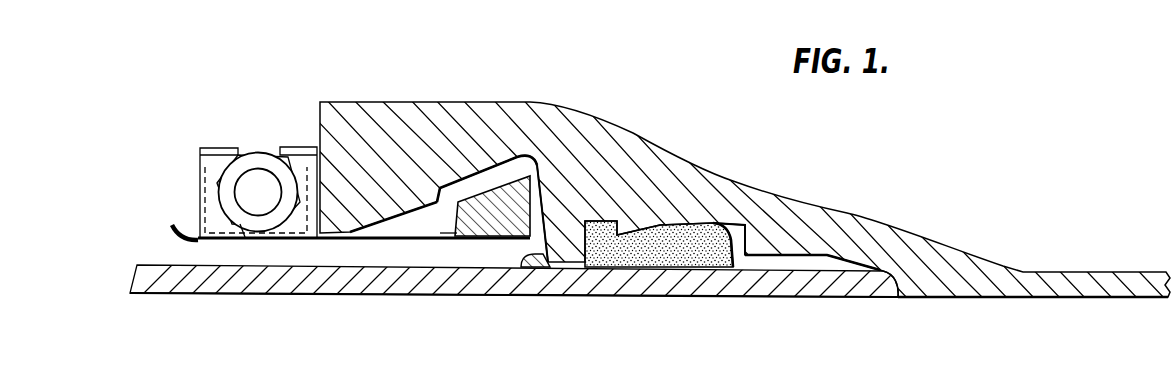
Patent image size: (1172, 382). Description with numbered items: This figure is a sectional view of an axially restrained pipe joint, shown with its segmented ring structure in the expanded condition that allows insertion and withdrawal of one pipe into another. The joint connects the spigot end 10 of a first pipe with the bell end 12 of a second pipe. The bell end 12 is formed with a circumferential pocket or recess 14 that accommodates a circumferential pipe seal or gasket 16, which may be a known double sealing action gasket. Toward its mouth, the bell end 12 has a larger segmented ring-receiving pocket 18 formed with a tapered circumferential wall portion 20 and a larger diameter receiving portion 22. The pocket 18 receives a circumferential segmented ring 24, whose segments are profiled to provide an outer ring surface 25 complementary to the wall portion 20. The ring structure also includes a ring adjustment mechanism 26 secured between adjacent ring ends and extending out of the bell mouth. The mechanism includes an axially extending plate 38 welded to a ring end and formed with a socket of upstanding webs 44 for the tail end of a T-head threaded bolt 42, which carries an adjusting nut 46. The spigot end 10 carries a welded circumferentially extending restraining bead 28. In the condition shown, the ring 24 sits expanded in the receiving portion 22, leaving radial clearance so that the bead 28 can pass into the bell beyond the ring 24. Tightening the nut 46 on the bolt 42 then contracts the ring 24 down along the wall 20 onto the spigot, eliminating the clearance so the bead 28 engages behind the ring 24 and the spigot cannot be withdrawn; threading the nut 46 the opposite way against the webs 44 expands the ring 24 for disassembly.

The spigot end 10 is at (278, 295).
The bell end 12 is at (685, 197).
The circumferential pocket or recess 14 is at (735, 245).
The pipe seal or gasket 16 is at (677, 248).
The segmented ring-receiving pocket 18 is at (447, 211).
The tapered circumferential wall portion 20 is at (386, 224).
The larger diameter receiving portion 22 is at (483, 183).
The circumferential segmented ring 24 is at (491, 216).
The outer ring surface 25 is at (510, 180).
The ring adjustment mechanism 26 is at (190, 225).
The restraining bead 28 is at (537, 268).
The axially extending plate 38 is at (364, 254).
The T-head threaded bolt 42 is at (252, 183).
The upstanding webs 44 is at (215, 158).
The adjusting nut 46 is at (247, 222).